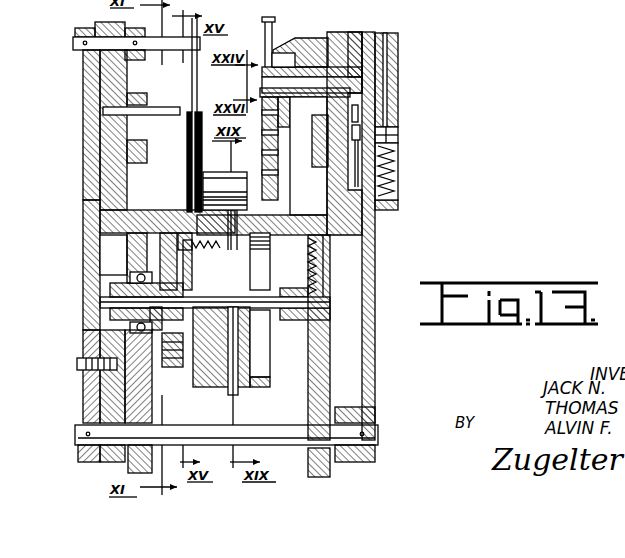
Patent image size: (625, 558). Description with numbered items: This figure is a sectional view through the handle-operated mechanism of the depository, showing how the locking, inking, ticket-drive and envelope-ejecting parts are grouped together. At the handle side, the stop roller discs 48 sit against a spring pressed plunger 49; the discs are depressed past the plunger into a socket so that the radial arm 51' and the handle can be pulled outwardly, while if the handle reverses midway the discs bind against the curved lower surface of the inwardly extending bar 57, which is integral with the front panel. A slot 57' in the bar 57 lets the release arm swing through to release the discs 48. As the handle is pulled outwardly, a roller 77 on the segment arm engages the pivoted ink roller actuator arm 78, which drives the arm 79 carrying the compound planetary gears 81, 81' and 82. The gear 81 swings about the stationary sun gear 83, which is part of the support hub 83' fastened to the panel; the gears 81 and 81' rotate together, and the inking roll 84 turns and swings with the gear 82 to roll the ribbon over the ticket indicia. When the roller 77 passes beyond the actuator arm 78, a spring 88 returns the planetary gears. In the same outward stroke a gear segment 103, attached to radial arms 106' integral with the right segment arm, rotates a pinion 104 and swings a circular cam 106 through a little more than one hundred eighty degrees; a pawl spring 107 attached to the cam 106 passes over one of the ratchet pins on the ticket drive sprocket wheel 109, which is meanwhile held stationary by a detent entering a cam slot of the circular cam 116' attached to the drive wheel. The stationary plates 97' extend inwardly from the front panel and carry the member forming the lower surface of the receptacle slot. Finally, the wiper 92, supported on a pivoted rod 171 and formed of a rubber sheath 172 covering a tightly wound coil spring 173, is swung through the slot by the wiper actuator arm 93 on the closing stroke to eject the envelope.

The wiper actuator arm 93 is at (84, 75).
The radial arms 106' is at (60, 265).
The pinion 104 is at (112, 264).
The plates 97' is at (196, 337).
The gear segment 103 is at (132, 383).
The pivoted rod 171 is at (192, 76).
The wiper arm 92 is at (201, 123).
The coil spring 173 is at (147, 152).
The rubber sheath 172 is at (187, 170).
The inking roll 84 is at (186, 192).
The compound planetary gear 81' is at (231, 178).
The compound planetary gear 81 is at (283, 150).
The gear carrying arm 79 is at (303, 160).
The compound planetary gear 82 is at (268, 236).
The spring 88 is at (263, 60).
The sun gear 83 is at (300, 34).
The support hub 83' is at (342, 118).
The inwardly extending bar 57 is at (377, 39).
The slot 57' is at (404, 121).
The ink roller actuator arm 78 is at (358, 105).
The roller 77 is at (360, 132).
The stop roller discs 48 is at (396, 138).
The spring pressed plunger 49 is at (393, 155).
The radial arm 51' is at (390, 236).
The pawl spring 107 is at (268, 328).
The ticket drive sprocket wheel 109 is at (270, 367).
The circular cam 106 is at (207, 365).
The circular cam 116' is at (256, 362).